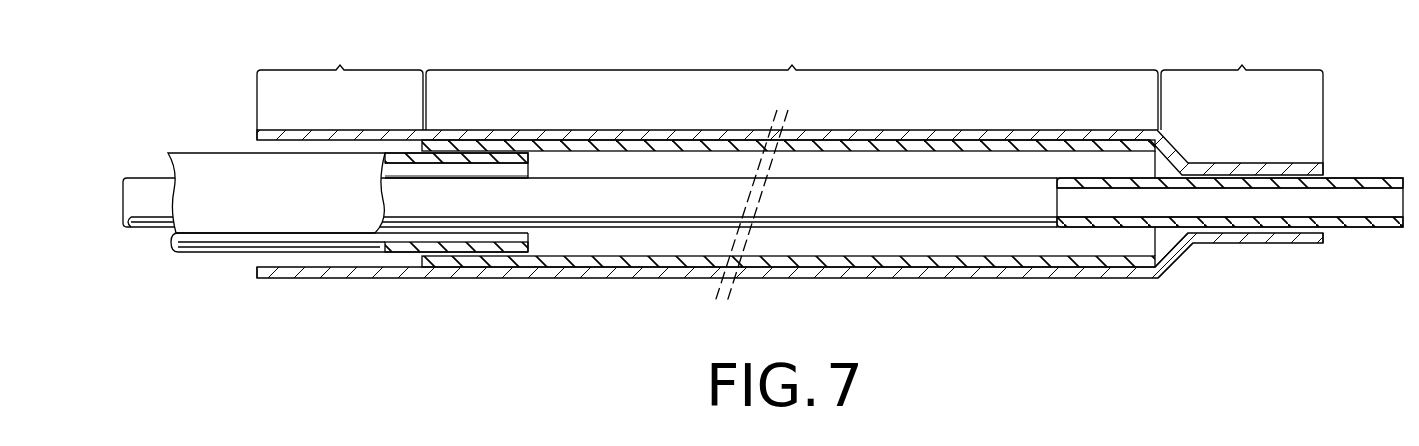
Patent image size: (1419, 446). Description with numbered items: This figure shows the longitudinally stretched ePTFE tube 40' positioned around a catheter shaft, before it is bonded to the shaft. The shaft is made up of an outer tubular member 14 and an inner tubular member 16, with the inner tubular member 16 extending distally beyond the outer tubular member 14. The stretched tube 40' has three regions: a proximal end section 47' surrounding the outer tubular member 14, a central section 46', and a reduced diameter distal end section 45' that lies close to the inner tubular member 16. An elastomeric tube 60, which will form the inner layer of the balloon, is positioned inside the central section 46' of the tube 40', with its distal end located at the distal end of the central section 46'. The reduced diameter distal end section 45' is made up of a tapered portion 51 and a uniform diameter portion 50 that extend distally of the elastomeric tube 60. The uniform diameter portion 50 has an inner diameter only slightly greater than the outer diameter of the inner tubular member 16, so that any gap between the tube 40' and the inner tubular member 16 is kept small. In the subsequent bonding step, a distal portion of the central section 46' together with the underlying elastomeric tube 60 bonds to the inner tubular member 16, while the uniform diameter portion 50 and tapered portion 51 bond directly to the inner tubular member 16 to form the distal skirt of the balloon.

The outer tubular member 14 is at (228, 233).
The inner tubular member 16 is at (142, 216).
The longitudinally stretched tube 40' is at (790, 234).
The reduced diameter distal end section 45' is at (1242, 142).
The central section 46' is at (790, 154).
The proximal end section 47' is at (340, 159).
The uniform diameter portion 50 is at (1270, 243).
The tapered portion 51 is at (1175, 258).
The elastomeric tube 60 is at (1080, 258).